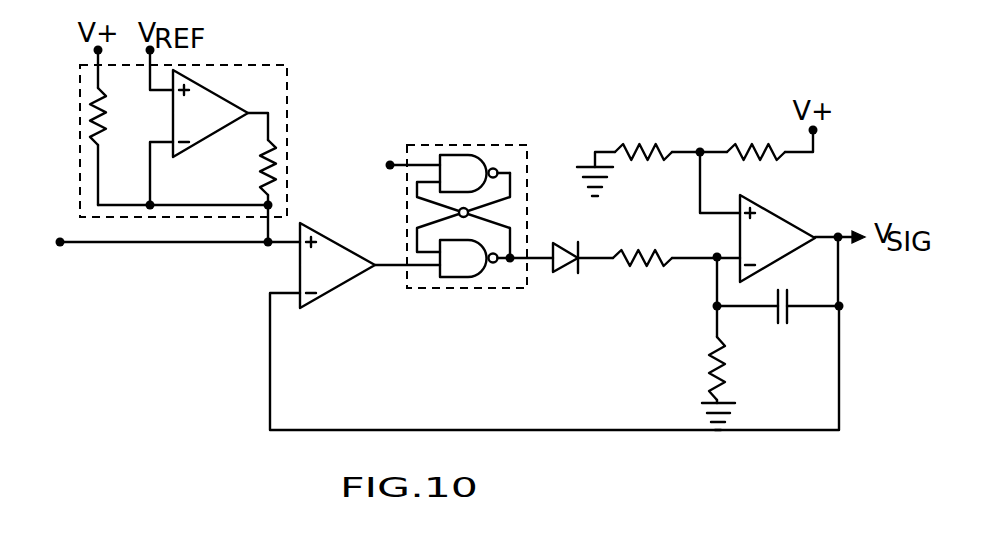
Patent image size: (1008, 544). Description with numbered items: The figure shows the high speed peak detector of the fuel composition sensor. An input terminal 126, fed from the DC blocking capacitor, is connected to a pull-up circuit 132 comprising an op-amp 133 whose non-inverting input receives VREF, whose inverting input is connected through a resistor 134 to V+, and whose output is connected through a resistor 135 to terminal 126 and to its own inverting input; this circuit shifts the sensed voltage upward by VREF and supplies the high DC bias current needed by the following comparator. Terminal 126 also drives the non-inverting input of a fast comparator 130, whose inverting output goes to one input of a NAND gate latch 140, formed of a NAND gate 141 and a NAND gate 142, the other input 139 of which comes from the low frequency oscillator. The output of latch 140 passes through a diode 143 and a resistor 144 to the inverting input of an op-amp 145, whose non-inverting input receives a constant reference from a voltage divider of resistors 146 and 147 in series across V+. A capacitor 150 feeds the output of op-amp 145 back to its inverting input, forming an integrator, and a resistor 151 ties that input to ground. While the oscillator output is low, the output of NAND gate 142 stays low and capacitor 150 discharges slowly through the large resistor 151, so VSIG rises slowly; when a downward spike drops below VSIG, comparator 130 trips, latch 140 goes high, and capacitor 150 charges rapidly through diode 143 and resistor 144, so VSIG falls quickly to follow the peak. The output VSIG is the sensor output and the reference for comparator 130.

The input terminal 126 is at (62, 246).
The fast comparator 130 is at (342, 277).
The pull-up circuit 132 is at (253, 63).
The op-amp 133 is at (220, 100).
The resistor 134 is at (104, 113).
The resistor 135 is at (272, 168).
The input 139 is at (390, 164).
The NAND gate latch 140 is at (530, 165).
The NAND gate 141 is at (470, 162).
The NAND gate 142 is at (456, 270).
The diode 143 is at (562, 267).
The resistor 144 is at (636, 258).
The op-amp 145 is at (777, 230).
The resistor 146 is at (618, 146).
The resistor 147 is at (758, 145).
The capacitor 150 is at (788, 313).
The resistor 151 is at (707, 352).